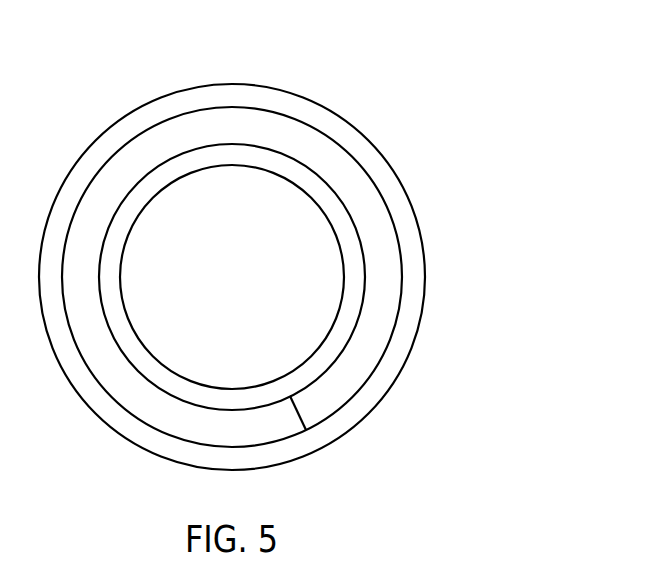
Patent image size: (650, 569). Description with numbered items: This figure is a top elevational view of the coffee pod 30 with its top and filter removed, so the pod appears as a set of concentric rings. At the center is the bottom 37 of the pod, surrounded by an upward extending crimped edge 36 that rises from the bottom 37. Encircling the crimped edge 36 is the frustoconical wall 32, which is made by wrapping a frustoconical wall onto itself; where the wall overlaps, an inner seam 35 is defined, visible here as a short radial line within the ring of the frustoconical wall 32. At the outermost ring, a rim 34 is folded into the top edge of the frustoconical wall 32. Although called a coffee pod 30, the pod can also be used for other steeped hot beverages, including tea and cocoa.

The coffee pod 30 is at (438, 112).
The frustoconical wall 32 is at (367, 195).
The rim 34 is at (417, 275).
The inner seam 35 is at (305, 418).
The crimped edge 36 is at (217, 153).
The bottom 37 is at (248, 294).